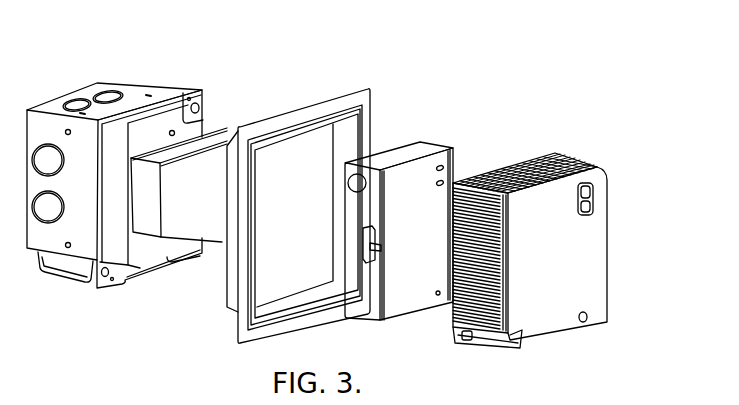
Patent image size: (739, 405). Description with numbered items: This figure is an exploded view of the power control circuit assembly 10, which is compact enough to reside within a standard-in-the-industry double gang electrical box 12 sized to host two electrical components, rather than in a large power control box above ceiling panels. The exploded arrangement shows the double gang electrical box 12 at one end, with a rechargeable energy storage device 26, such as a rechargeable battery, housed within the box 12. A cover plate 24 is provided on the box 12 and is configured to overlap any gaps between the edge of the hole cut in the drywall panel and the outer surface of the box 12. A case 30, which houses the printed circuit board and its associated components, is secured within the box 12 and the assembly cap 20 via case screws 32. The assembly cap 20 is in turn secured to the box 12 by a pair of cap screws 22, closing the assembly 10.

The power control circuit assembly 10 is at (485, 63).
The double gang electrical box 12 is at (133, 84).
The assembly cap 20 is at (530, 265).
The cap screws 22 is at (470, 343).
The cover plate 24 is at (302, 112).
The rechargeable energy storage device 26 is at (222, 133).
The case 30 is at (399, 244).
The case screws 32 is at (373, 262).